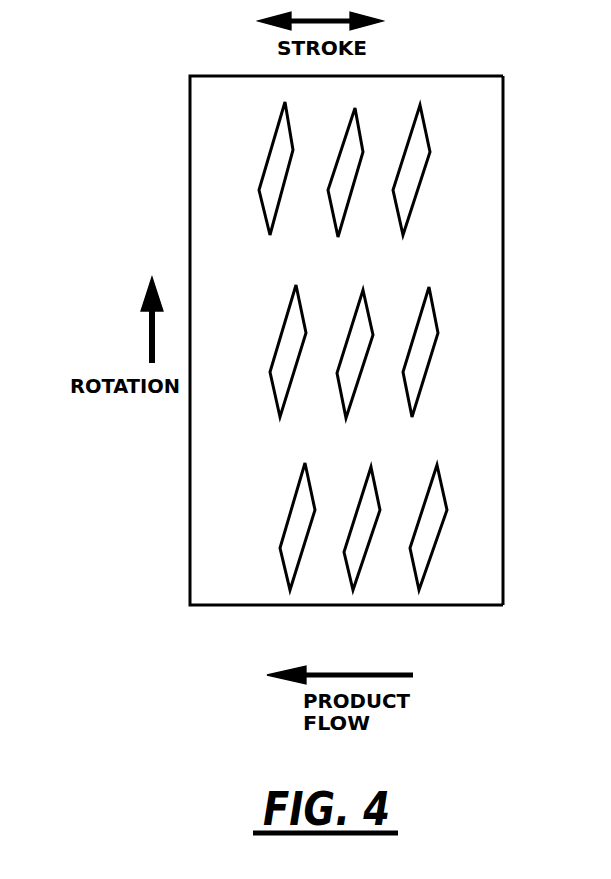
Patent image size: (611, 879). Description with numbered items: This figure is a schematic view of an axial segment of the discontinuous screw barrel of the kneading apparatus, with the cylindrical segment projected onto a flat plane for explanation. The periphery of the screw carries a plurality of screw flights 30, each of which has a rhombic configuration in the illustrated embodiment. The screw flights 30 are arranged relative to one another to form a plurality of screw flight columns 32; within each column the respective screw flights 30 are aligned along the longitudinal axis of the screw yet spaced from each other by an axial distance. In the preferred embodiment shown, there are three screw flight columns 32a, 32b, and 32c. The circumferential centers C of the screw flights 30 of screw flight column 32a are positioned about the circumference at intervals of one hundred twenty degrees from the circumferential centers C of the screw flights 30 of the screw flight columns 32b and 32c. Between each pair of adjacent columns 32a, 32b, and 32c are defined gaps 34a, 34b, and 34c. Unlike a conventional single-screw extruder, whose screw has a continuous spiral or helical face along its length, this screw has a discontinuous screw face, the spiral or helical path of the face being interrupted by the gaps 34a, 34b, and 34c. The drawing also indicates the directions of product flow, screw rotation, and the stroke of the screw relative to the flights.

The screw flight 30 is at (422, 126).
The screw flight column 32 is at (516, 95).
The first screw flight column 32a is at (516, 145).
The second screw flight column 32b is at (517, 351).
The third screw flight column 32c is at (517, 520).
The gap 34a is at (392, 269).
The gap 34b is at (385, 448).
The gap 34c is at (349, 109).
The circumferential center C is at (276, 160).